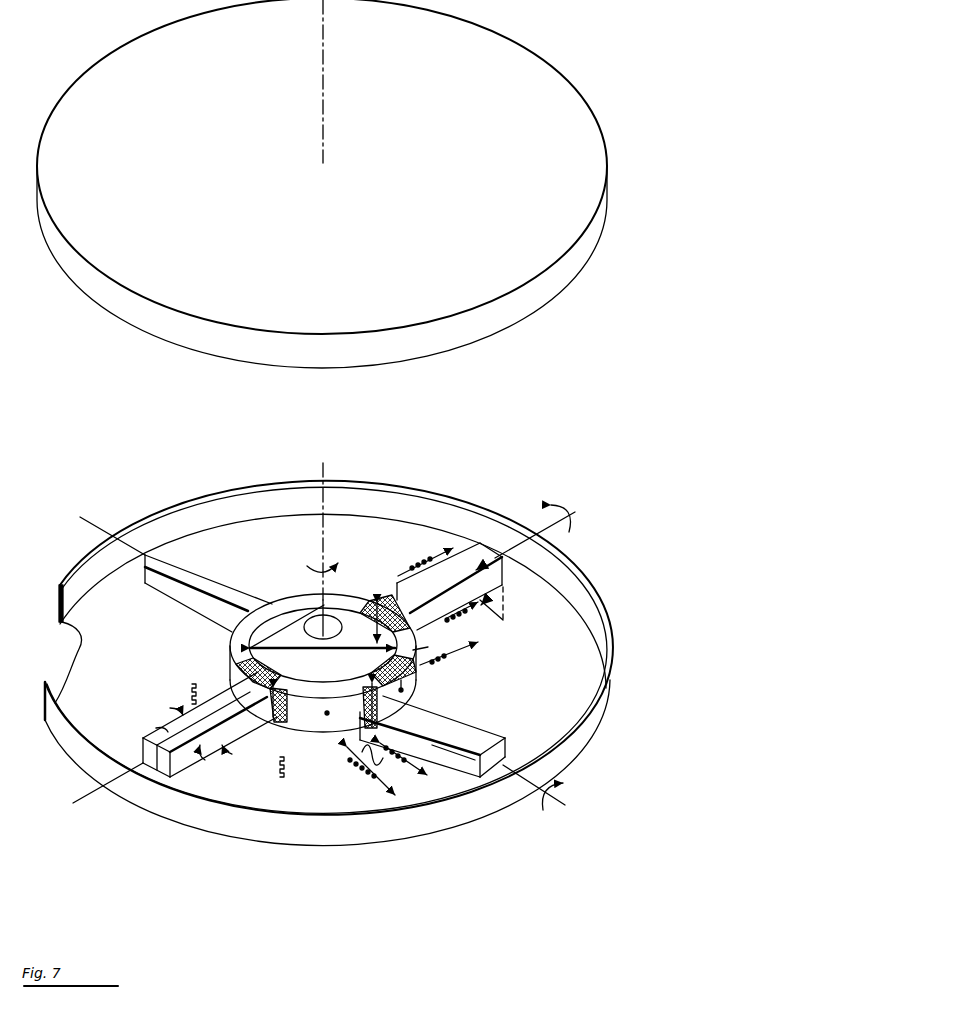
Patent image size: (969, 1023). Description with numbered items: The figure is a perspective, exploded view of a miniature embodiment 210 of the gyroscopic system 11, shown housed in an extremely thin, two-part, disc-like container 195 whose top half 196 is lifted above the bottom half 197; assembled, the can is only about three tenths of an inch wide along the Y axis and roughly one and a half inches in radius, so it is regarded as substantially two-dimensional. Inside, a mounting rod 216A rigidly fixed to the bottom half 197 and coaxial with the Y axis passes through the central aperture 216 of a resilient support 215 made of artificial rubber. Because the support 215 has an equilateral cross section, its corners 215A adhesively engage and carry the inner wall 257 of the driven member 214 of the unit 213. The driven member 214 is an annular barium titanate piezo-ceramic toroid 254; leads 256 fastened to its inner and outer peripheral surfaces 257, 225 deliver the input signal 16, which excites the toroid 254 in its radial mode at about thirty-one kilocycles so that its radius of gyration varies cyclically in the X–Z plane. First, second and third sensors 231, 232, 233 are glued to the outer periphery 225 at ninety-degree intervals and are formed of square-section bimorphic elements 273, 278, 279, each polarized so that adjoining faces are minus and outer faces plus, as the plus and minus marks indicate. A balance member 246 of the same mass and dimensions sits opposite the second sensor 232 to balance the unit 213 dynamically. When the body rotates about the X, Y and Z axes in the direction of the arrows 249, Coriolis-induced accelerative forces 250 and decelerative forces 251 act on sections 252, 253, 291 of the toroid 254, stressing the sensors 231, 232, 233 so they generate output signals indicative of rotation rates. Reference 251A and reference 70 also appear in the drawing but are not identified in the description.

The top half 196 is at (588, 198).
The container 195 is at (421, 488).
The embodiment 210 is at (246, 487).
The bottom half 197 is at (152, 531).
The gyroscopic system 11 is at (176, 494).
The arrows 249 is at (447, 669).
The driven member 214 is at (277, 603).
The inner wall 257 is at (302, 608).
The central aperture 216 is at (321, 641).
The corners 215A is at (378, 576).
The mounting rod 216A is at (358, 641).
The resilient support 215 is at (287, 626).
The section 291 is at (383, 605).
The accelerative forces 250 is at (398, 606).
The decelerative forces 251 is at (378, 738).
The strain gauge 251A is at (372, 663).
The section 252 is at (302, 716).
The outer peripheral surface 225 is at (327, 716).
The balance member 246 is at (181, 576).
The third sensor 233 is at (468, 550).
The bimorphic element 279 is at (500, 572).
The second sensor 232 is at (484, 731).
The bimorphic element 278 is at (443, 703).
The section 253 is at (407, 678).
The unit 213 is at (449, 653).
The toroid 254 is at (433, 641).
The input signal 16 is at (387, 769).
The leads 256 is at (333, 760).
The first sensor 231 is at (213, 724).
The gauge strip 70 is at (150, 731).
The bimorphic element 273 is at (232, 726).